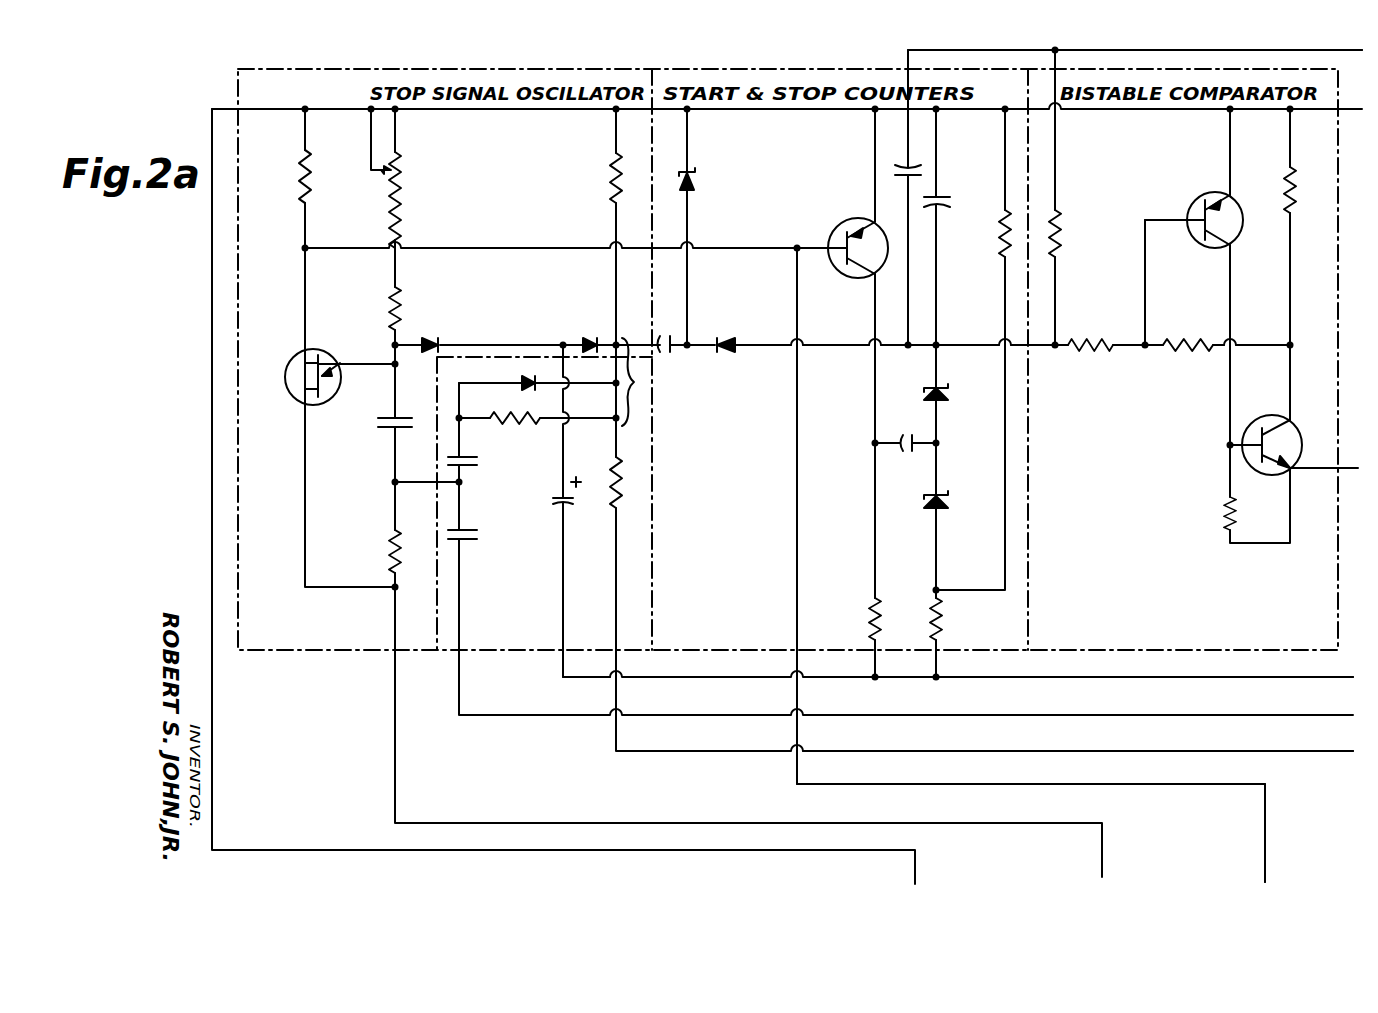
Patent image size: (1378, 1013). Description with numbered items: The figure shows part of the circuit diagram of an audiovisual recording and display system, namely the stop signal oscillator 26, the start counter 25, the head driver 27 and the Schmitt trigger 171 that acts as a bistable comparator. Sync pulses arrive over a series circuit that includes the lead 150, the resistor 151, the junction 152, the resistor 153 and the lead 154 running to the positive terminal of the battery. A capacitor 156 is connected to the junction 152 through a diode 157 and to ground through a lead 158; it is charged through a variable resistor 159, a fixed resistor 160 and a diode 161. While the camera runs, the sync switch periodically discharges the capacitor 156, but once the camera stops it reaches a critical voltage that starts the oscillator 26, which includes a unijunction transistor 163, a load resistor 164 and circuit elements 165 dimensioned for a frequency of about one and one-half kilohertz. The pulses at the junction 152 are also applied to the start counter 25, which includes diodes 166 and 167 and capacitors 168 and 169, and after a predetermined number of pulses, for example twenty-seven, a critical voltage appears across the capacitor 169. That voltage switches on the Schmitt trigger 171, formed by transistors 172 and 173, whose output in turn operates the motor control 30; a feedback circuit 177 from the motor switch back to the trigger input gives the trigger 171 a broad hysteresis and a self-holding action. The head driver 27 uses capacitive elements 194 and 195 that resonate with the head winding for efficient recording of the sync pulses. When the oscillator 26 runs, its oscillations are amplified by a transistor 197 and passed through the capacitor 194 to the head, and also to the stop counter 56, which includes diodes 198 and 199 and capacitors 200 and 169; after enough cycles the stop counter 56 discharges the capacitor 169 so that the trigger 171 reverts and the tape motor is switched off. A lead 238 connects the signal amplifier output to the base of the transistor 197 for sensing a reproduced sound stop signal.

The start counter 25 is at (800, 212).
The stop signal oscillator 26 is at (497, 156).
The head driver 27 is at (536, 616).
The motor control 30 is at (1245, 655).
The stop counter 56 is at (920, 565).
The lead 150 is at (960, 751).
The resistor 151 is at (618, 460).
The junction 152 is at (634, 382).
The resistor 153 is at (613, 196).
The lead 154 is at (665, 110).
The capacitor 156 is at (552, 498).
The diode 157 is at (584, 332).
The lead 158 is at (658, 677).
The variable resistor 159 is at (398, 192).
The fixed resistor 160 is at (394, 298).
The diode 161 is at (430, 340).
The unijunction transistor 163 is at (294, 354).
The load resistor 164 is at (304, 162).
The circuit elements 165 is at (382, 423).
The diode 166 is at (693, 180).
The diode 167 is at (728, 340).
The capacitor 168 is at (672, 352).
The capacitor 169 is at (940, 200).
The Schmitt trigger 171 is at (1280, 306).
The transistor 172 is at (1218, 196).
The transistor 173 is at (1276, 417).
The feedback circuit 177 is at (1110, 50).
The capacitive element 194 is at (468, 542).
The capacitive element 195 is at (481, 452).
The transistor 197 is at (866, 277).
The diode 198 is at (944, 505).
The diode 199 is at (942, 392).
The capacitor 200 is at (918, 412).
The lead 238 is at (1265, 820).